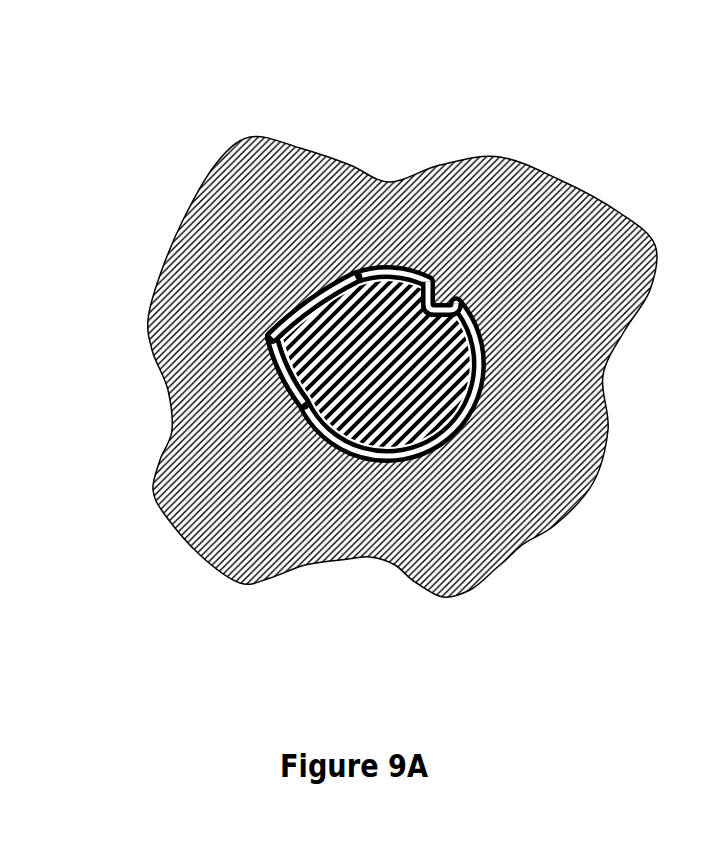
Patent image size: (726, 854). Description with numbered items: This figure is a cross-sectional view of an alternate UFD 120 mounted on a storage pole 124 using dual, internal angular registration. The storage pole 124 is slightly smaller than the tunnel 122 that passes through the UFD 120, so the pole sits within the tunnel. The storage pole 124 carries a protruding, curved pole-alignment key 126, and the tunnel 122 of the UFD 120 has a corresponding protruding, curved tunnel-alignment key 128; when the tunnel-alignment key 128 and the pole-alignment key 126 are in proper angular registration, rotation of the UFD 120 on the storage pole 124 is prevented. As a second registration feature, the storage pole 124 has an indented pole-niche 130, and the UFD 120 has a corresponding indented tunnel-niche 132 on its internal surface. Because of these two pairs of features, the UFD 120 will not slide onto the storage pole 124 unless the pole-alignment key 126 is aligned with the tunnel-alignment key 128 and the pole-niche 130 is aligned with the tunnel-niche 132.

The UFD 120 is at (602, 423).
The tunnel 122 is at (450, 447).
The storage pole 124 is at (400, 457).
The pole-alignment key 126 is at (283, 367).
The tunnel-alignment key 128 is at (267, 353).
The pole-niche 130 is at (340, 268).
The tunnel-niche 132 is at (445, 297).